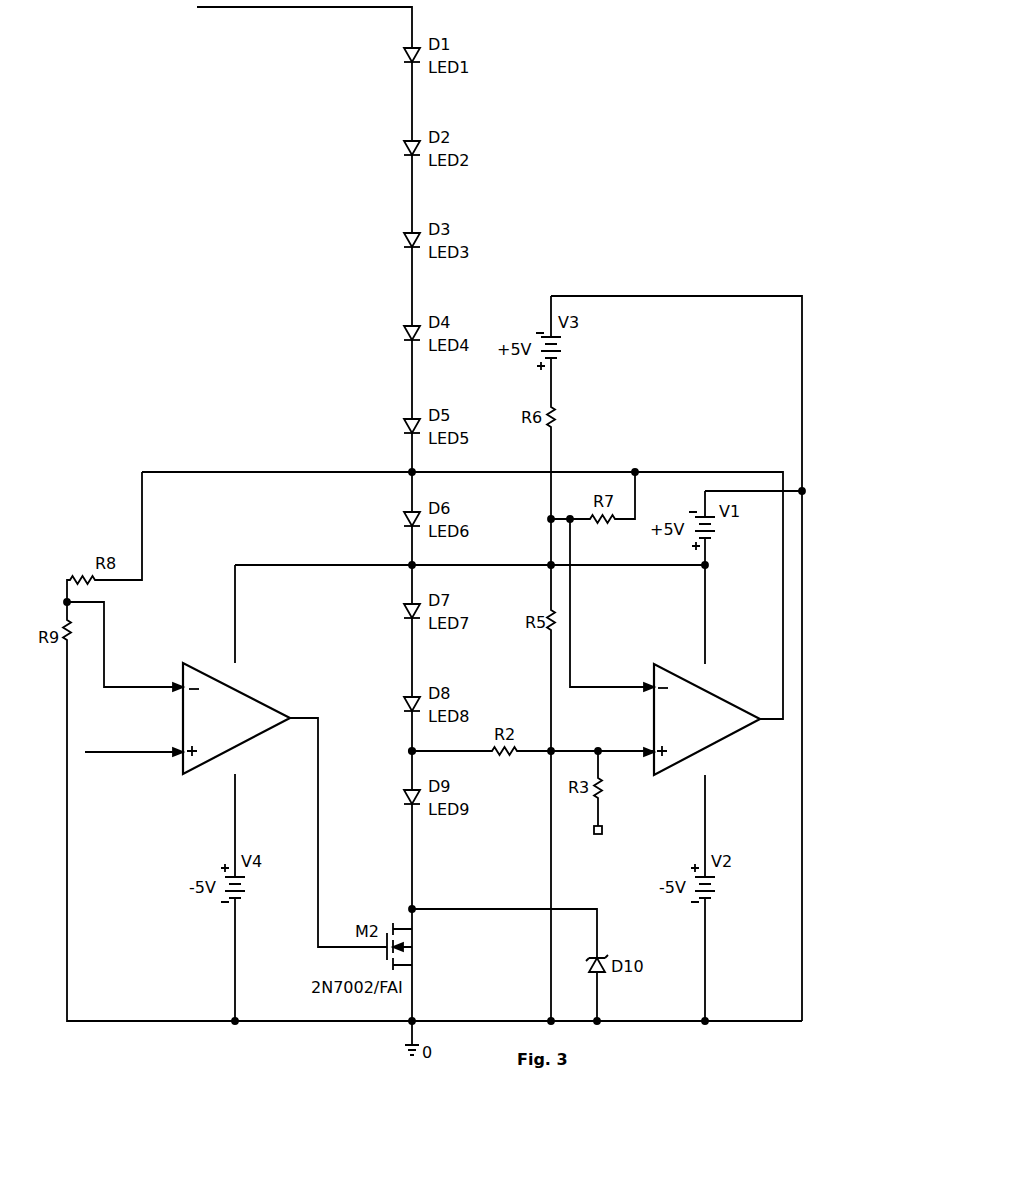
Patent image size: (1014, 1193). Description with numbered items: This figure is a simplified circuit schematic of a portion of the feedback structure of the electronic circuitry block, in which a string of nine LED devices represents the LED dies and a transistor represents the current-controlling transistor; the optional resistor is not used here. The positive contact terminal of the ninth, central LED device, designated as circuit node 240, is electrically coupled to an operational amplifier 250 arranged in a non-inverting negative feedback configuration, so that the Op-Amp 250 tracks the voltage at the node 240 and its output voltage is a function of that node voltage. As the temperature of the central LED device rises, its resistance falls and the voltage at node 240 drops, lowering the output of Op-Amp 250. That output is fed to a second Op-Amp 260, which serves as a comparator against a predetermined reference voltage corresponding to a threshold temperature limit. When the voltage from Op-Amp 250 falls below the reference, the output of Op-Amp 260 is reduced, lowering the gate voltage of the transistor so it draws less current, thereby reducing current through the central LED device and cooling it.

The circuit node 240 is at (398, 748).
The operational amplifier 250 is at (654, 712).
The Op-Amp 260 is at (183, 712).